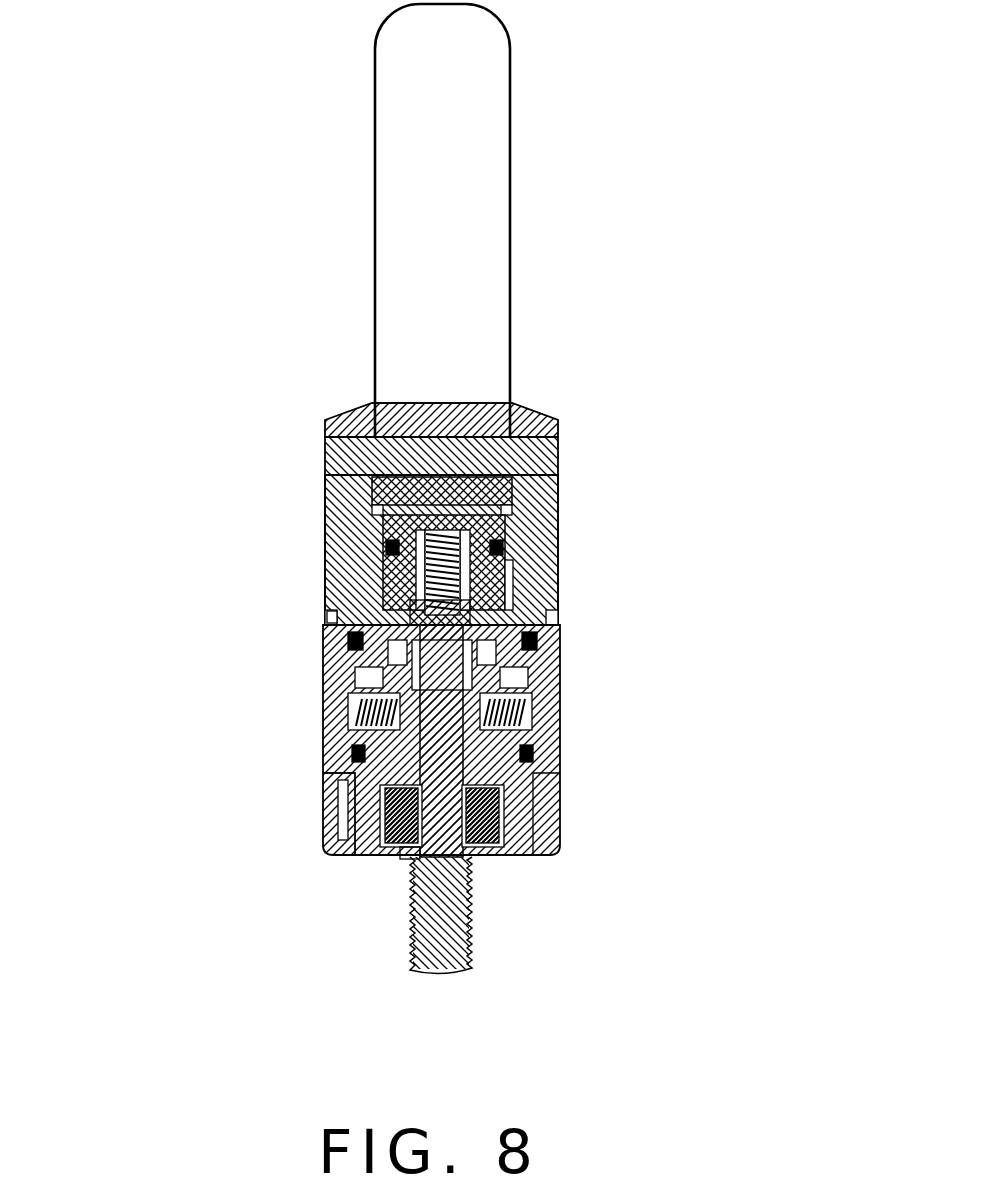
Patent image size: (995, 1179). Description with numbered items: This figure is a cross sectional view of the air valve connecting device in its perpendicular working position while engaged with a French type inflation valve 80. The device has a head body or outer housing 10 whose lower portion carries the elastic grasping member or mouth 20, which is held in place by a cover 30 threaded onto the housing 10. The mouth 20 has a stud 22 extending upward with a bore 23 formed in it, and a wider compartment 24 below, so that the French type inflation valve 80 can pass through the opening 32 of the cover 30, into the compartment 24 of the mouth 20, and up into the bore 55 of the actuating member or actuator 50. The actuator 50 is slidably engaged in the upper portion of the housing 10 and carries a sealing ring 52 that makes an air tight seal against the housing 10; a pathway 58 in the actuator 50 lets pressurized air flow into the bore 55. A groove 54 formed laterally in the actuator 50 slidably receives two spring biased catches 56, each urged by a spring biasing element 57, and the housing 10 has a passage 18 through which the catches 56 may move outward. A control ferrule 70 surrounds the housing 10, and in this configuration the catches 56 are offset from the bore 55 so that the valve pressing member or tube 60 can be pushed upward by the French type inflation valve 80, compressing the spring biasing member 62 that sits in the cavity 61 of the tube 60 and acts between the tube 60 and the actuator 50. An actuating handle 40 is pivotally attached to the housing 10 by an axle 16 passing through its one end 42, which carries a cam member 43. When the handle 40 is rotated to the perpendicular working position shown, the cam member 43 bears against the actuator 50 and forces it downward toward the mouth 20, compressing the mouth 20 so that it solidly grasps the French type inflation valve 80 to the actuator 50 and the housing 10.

The head body or outer housing 10 is at (327, 487).
The axle 16 is at (558, 447).
The passage 18 is at (558, 740).
The elastic grasping member or mouth 20 is at (330, 832).
The stud 22 is at (345, 797).
The bore 23 is at (445, 790).
The compartment 24 is at (410, 858).
The cover 30 is at (500, 820).
The opening 32 is at (405, 855).
The actuating handle 40 is at (486, 176).
The one end 42 is at (540, 413).
The cam member 43 is at (558, 502).
The actuating member or actuator 50 is at (397, 590).
The sealing ring 52 is at (380, 540).
The groove 54 is at (355, 752).
The bore 55 is at (497, 548).
The catches 56 is at (355, 712).
The spring biasing elements 57 is at (527, 712).
The pathway 58 is at (505, 600).
The valve pressing member or tube 60 is at (333, 618).
The cavity 61 is at (455, 585).
The spring biasing member 62 is at (392, 556).
The control ferrule 70 is at (560, 645).
The French type inflation valve 80 is at (468, 912).